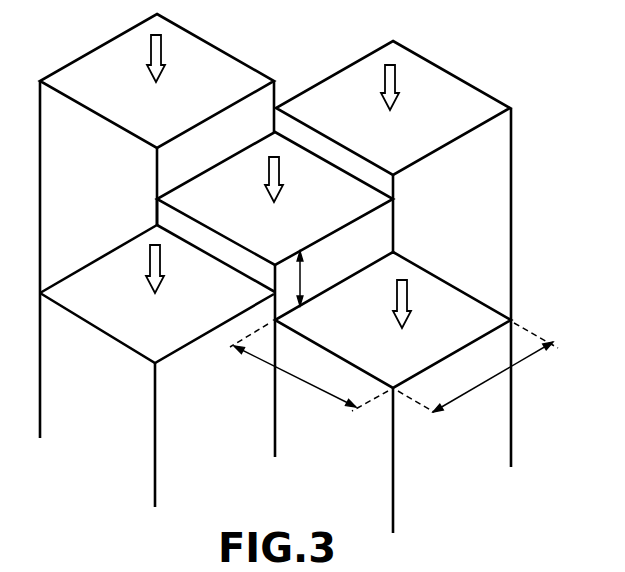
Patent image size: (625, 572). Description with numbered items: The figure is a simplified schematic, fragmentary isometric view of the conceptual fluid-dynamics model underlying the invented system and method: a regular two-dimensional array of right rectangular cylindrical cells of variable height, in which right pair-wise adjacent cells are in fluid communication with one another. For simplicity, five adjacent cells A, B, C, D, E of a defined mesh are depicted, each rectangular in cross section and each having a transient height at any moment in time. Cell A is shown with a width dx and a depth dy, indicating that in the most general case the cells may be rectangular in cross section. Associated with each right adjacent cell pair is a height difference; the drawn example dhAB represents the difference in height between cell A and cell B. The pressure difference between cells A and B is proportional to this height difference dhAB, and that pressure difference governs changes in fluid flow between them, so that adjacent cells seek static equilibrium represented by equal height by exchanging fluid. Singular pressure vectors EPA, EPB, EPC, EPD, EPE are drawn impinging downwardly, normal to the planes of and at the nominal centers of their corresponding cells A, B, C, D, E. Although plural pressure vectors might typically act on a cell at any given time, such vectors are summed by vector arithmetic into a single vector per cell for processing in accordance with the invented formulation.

The cell A is at (286, 247).
The cell B is at (405, 365).
The cell C is at (165, 335).
The cell D is at (165, 118).
The cell E is at (404, 147).
The pressure vector EPA is at (299, 179).
The pressure vector EPB is at (428, 304).
The pressure vector EPC is at (181, 269).
The pressure vector EPD is at (183, 58).
The pressure vector EPE is at (416, 87).
The height difference dhAB is at (333, 278).
The width dx is at (309, 371).
The depth dy is at (478, 373).